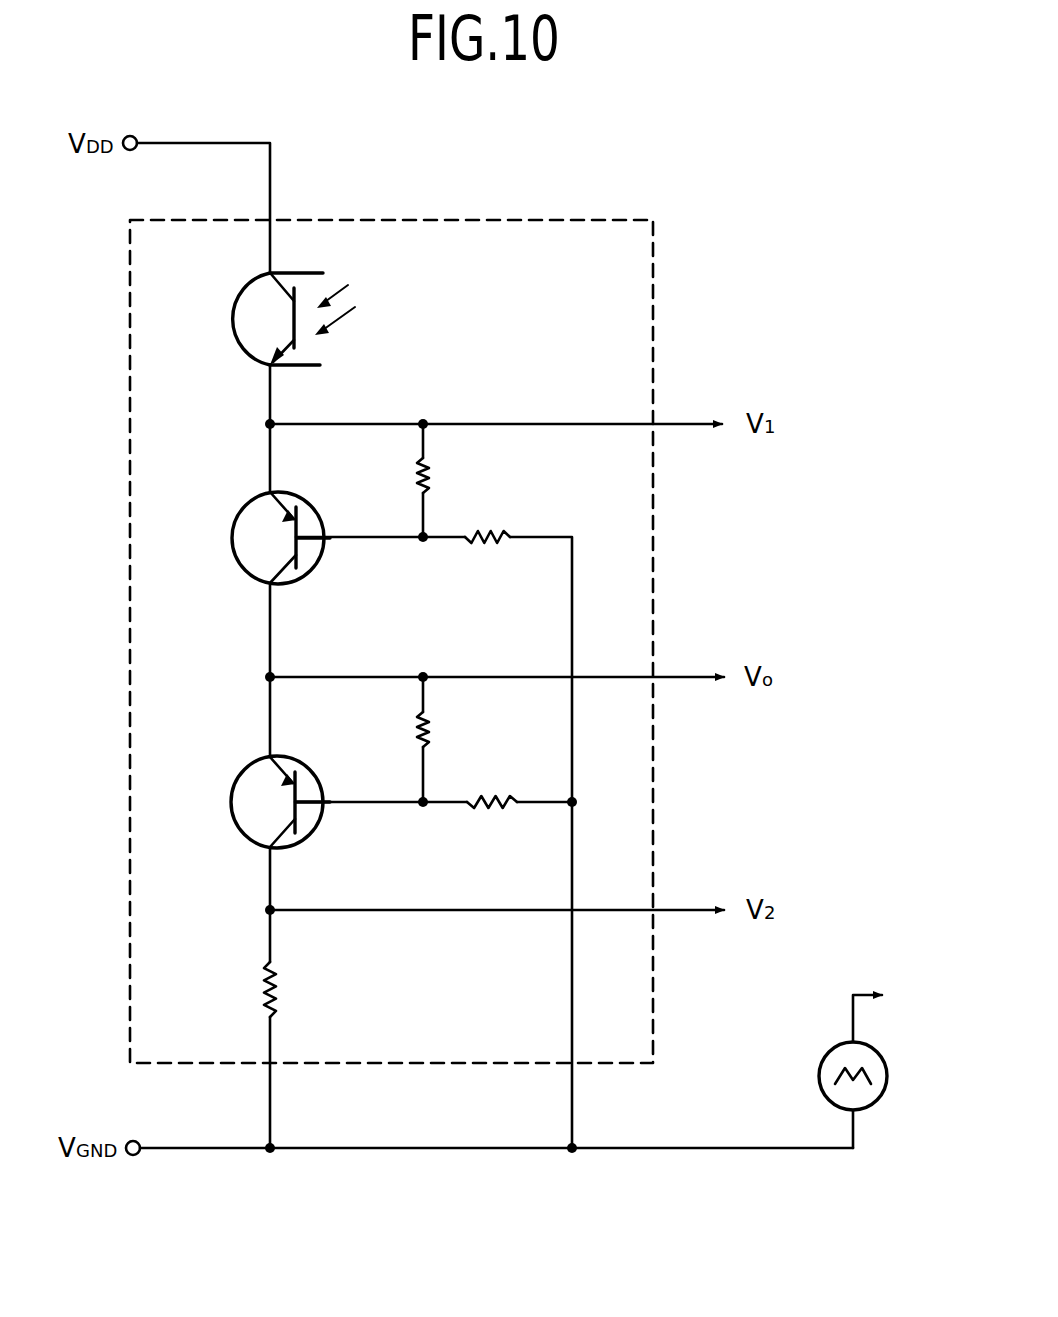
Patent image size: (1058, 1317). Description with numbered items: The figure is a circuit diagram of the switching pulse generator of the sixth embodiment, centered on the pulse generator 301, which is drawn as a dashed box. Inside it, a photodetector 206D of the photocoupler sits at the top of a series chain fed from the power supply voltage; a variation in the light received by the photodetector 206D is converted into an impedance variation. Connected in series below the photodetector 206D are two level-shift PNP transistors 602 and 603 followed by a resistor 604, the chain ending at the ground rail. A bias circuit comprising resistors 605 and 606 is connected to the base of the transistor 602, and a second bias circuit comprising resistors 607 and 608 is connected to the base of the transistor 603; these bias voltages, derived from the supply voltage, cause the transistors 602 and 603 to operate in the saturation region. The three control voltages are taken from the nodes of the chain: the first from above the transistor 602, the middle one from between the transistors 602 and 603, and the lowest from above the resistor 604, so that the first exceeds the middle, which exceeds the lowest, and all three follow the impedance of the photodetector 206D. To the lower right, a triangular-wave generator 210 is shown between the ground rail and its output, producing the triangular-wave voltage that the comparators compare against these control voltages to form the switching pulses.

The pulse generator 301 is at (653, 222).
The photodetector 206D is at (233, 307).
The level-shift PNP transistor 602 is at (240, 511).
The level-shift PNP transistor 603 is at (243, 770).
The resistor 604 is at (262, 963).
The resistor 605 is at (491, 531).
The resistor 606 is at (432, 470).
The resistor 607 is at (492, 810).
The resistor 608 is at (430, 718).
The triangular-wave generator 210 is at (833, 1050).